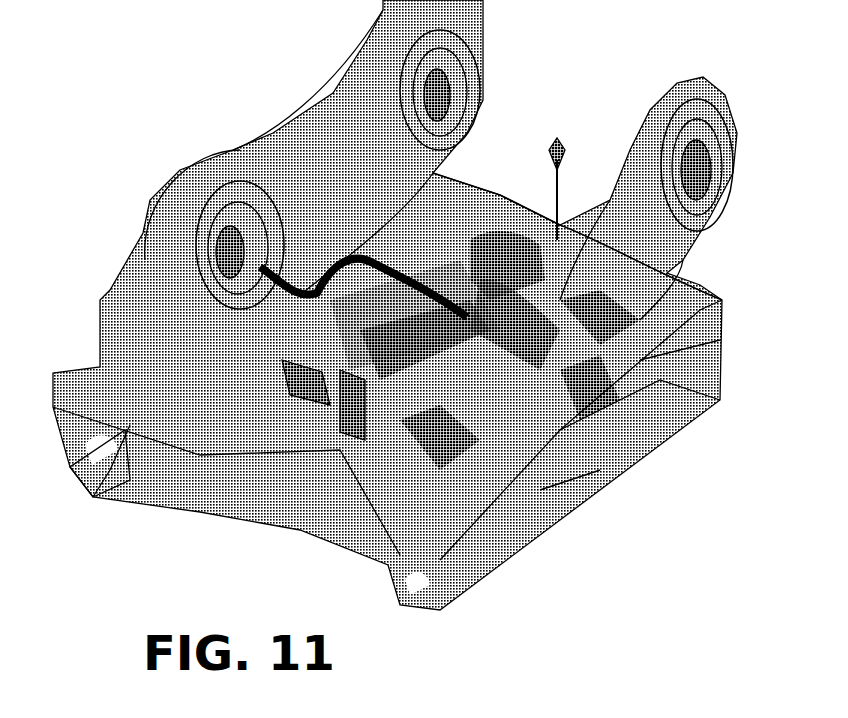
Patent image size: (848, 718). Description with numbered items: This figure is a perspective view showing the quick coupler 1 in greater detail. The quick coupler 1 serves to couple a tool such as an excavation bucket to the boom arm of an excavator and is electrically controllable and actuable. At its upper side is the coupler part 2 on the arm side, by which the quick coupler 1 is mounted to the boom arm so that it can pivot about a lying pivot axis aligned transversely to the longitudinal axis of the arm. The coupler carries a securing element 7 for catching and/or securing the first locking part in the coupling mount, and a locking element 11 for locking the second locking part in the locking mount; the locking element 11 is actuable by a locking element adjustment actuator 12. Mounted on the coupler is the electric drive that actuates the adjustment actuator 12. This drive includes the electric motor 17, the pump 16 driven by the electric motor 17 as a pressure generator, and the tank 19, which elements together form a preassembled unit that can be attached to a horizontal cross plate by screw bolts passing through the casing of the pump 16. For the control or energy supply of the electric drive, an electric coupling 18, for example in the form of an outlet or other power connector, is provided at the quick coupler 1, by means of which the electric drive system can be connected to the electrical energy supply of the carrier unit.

The quick coupler 1 is at (650, 464).
The coupler part 2 is at (262, 106).
The securing element 7 is at (653, 308).
The locking element 11 is at (94, 462).
The locking element adjustment actuator 12 is at (628, 353).
The pump 16 is at (355, 410).
The electric motor 17 is at (325, 388).
The electric coupling 18 is at (557, 152).
The tank 19 is at (427, 428).